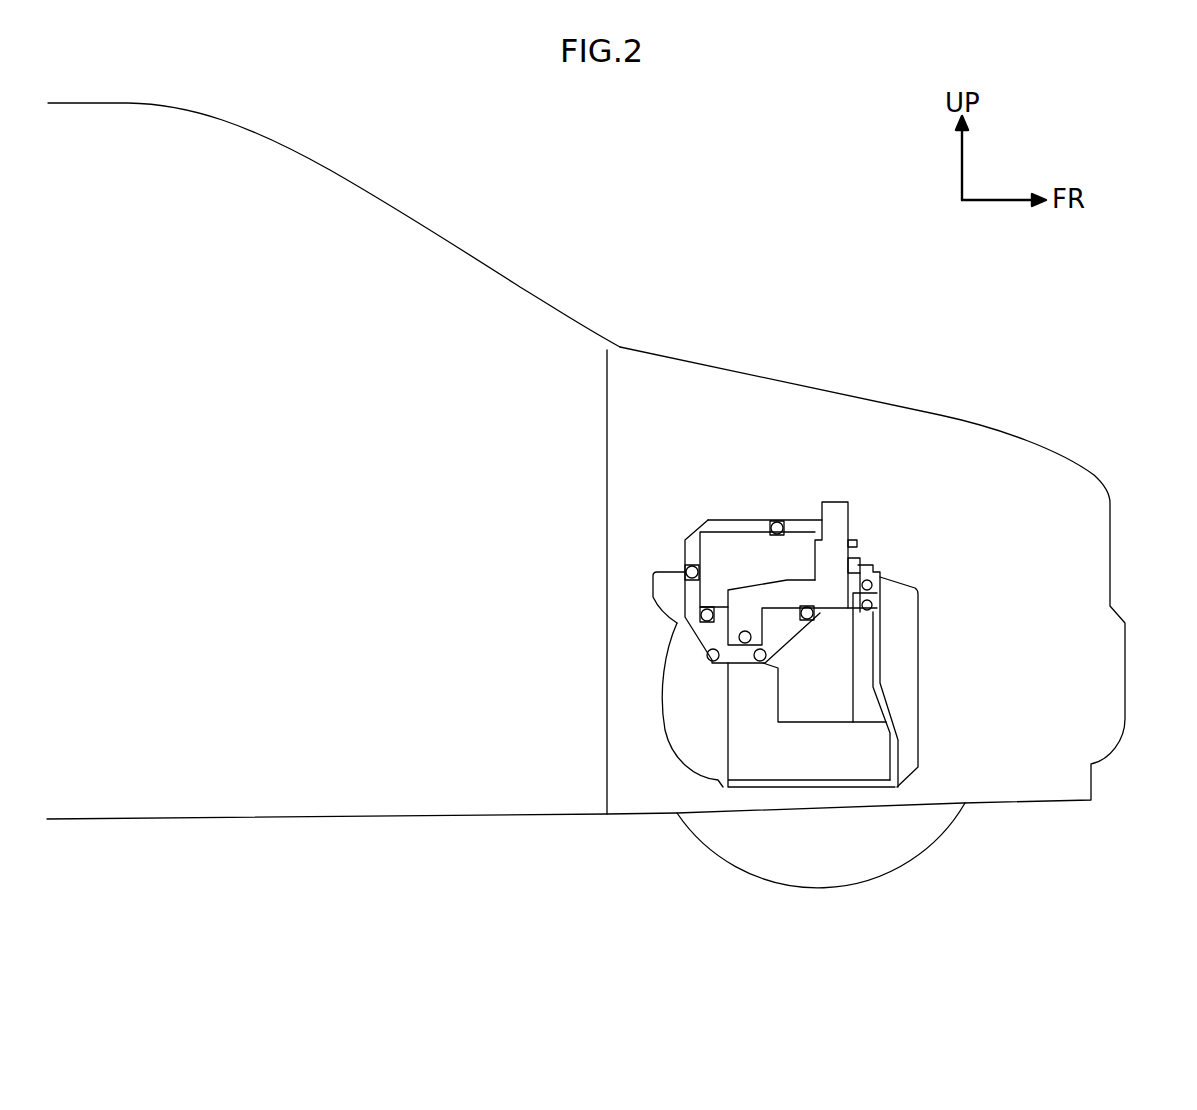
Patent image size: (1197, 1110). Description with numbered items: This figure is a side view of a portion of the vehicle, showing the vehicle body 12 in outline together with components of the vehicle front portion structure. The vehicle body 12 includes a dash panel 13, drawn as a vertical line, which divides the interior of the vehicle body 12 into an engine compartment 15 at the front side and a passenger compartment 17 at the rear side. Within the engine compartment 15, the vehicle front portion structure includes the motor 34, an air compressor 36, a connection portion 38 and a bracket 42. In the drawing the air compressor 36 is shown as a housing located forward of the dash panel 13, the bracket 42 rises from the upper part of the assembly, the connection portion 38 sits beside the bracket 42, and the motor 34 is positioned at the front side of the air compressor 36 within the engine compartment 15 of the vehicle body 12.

The vehicle body 12 is at (892, 392).
The dash panel 13 is at (608, 405).
The engine compartment 15 is at (773, 423).
The passenger compartment 17 is at (337, 443).
The motor 34 is at (902, 578).
The air compressor 36 is at (742, 549).
The connection portion 38 is at (858, 529).
The bracket 42 is at (837, 492).